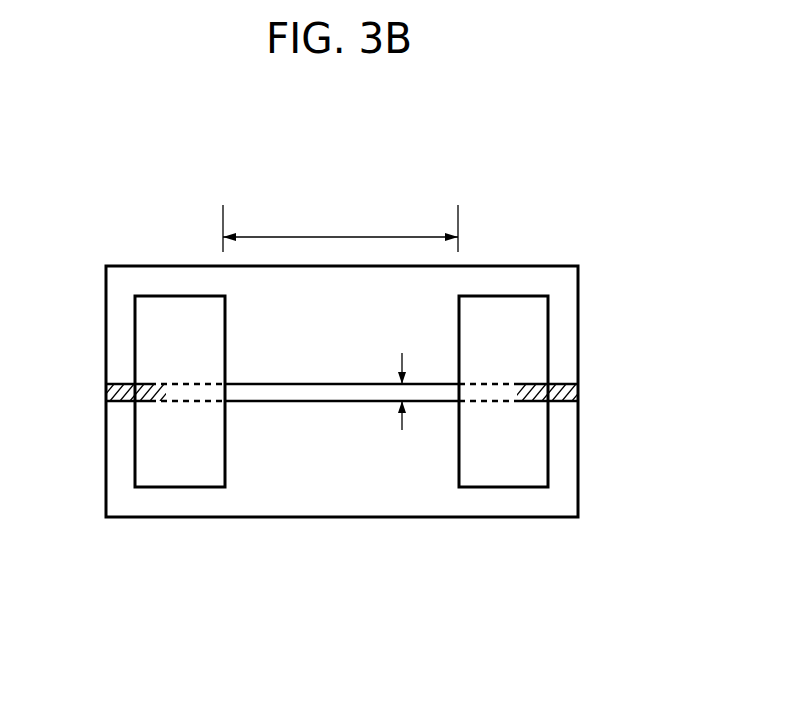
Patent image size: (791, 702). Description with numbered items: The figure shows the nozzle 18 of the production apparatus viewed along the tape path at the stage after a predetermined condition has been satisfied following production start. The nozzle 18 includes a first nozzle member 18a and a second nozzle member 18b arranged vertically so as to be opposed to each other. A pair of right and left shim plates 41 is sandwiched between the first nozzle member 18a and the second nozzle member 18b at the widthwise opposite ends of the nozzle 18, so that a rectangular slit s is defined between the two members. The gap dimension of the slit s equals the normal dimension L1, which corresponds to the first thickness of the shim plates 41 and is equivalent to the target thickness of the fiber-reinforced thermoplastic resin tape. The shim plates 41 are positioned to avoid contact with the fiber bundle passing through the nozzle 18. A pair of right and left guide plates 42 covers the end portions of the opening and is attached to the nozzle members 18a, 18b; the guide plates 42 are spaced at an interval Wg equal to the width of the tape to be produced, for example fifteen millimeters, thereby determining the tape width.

The nozzle 18 is at (565, 245).
The first nozzle member 18a is at (247, 313).
The second nozzle member 18b is at (351, 478).
The shim plates (first shim plates) 41 is at (130, 399).
The guide plates 42 is at (198, 473).
The slit s is at (313, 398).
The interval of the pair of guide plates Wg is at (340, 224).
The normal dimension L1 is at (387, 379).